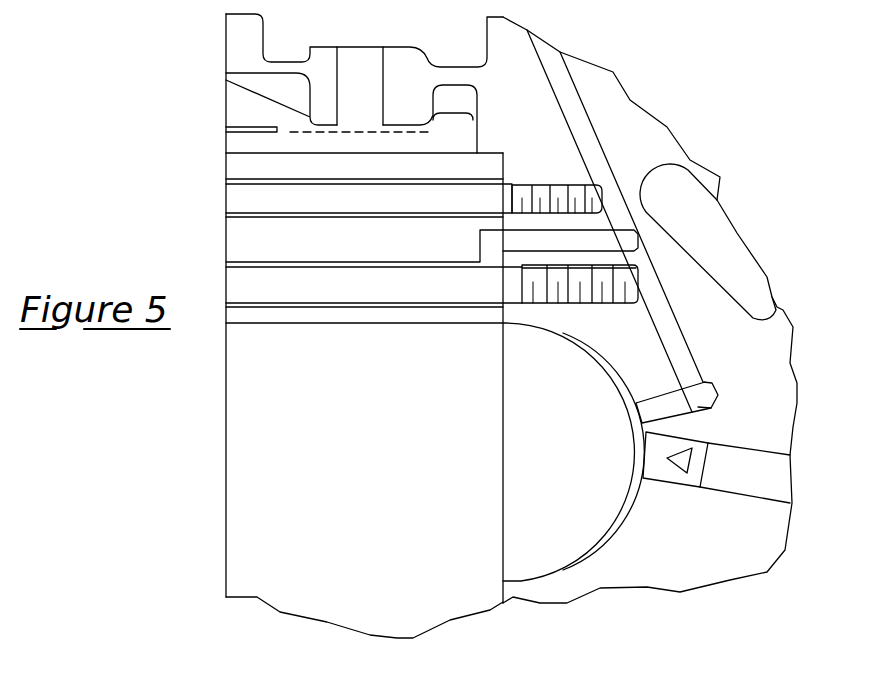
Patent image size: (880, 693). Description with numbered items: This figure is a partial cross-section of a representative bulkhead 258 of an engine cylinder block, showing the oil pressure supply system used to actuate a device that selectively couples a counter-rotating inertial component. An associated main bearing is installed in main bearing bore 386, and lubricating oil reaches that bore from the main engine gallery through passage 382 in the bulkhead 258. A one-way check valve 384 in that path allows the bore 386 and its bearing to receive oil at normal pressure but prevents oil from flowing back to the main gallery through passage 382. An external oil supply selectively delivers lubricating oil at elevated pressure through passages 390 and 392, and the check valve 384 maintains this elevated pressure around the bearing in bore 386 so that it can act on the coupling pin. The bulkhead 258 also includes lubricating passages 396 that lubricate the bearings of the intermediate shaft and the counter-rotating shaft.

The bulkhead 258 is at (530, 123).
The passage 390 is at (568, 98).
The lubricating passage 396 is at (590, 243).
The main bearing bore 386 is at (602, 368).
The passage 392 is at (662, 397).
The one-way check valve 384 is at (670, 473).
The passage 382 is at (757, 503).